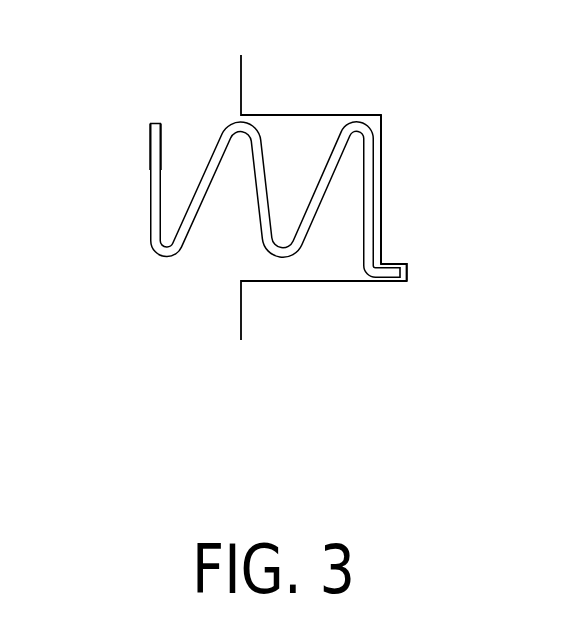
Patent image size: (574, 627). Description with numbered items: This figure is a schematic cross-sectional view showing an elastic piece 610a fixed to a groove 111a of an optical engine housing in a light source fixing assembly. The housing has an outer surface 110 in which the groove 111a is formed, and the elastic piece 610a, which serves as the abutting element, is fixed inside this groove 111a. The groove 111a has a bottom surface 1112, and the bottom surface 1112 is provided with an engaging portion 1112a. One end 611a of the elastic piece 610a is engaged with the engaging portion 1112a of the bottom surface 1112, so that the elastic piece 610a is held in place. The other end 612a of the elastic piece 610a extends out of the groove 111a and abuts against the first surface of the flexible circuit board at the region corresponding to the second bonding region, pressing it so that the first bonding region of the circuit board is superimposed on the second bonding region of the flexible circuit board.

The outer surface 110 is at (240, 75).
The groove 111a is at (295, 146).
The bottom surface 1112 is at (383, 150).
The engaging portion 1112a is at (392, 283).
The one end 611a is at (394, 266).
The elastic piece 610a is at (163, 256).
The other end 612a is at (151, 164).